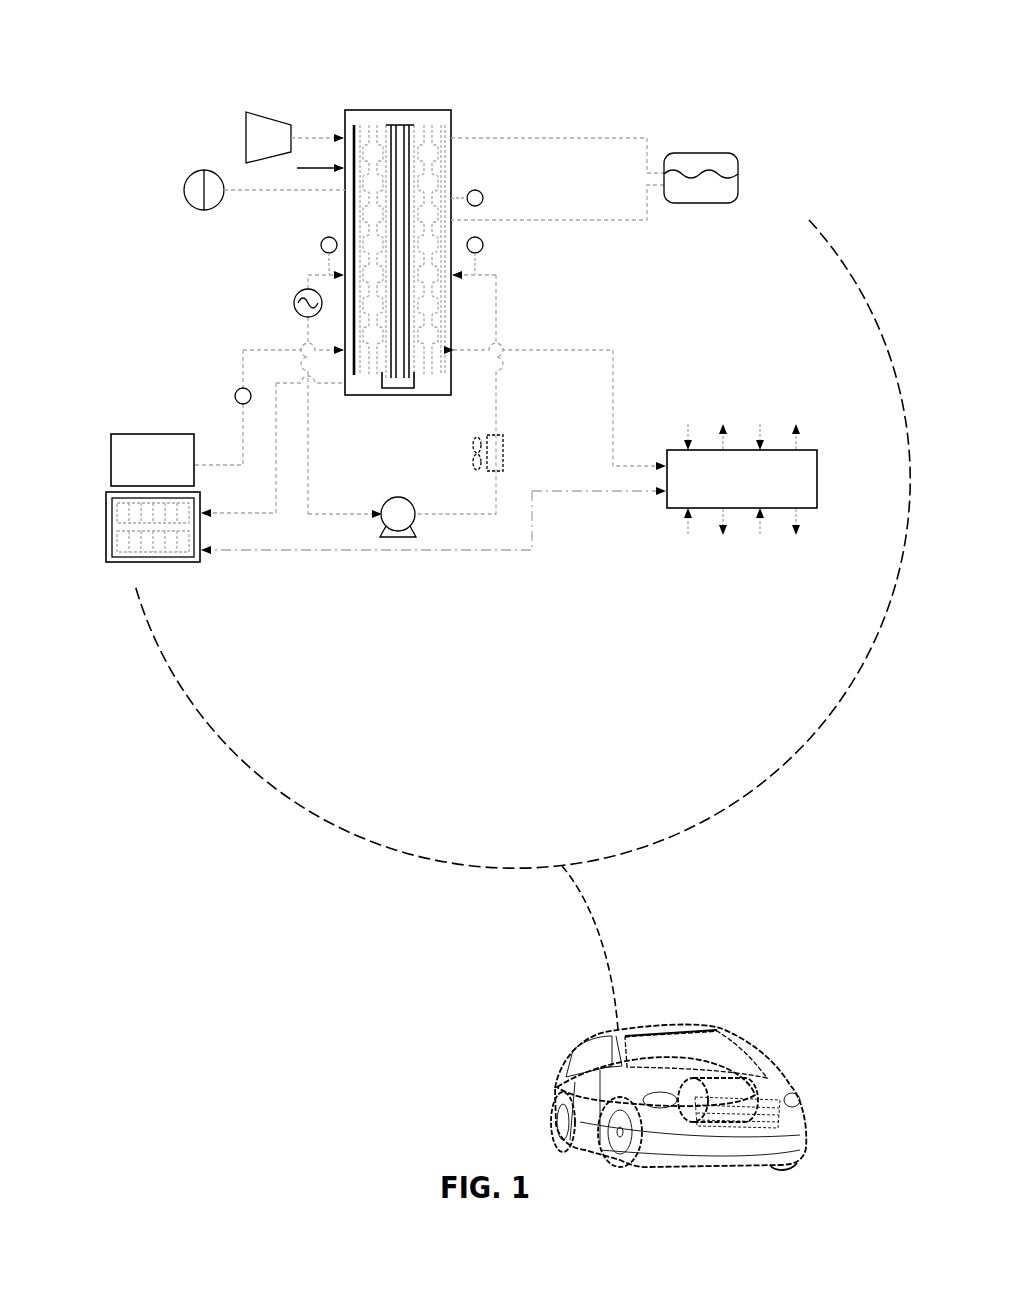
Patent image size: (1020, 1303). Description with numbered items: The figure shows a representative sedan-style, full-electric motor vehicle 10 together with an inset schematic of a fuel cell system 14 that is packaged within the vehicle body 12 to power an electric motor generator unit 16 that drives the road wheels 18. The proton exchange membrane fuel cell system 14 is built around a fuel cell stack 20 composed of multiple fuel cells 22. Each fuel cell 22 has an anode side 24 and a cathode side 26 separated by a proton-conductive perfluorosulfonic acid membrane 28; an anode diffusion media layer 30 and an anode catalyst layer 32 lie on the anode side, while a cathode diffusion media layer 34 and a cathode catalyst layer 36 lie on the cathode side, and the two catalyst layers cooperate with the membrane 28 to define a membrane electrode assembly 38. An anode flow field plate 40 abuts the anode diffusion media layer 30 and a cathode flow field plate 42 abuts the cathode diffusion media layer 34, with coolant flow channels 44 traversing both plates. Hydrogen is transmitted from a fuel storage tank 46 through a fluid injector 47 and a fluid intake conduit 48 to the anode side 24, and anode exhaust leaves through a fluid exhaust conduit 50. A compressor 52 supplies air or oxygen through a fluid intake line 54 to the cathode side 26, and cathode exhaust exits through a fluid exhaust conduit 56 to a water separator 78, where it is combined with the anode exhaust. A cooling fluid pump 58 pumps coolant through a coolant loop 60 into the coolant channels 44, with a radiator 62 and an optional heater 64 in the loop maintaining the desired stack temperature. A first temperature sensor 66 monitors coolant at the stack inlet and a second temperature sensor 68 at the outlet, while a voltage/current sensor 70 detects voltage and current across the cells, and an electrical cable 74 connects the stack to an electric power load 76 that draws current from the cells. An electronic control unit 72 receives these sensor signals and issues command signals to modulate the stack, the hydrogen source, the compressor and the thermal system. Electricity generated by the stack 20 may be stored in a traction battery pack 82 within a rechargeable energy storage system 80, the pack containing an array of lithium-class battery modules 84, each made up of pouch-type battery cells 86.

The motor vehicle 10 is at (745, 998).
The vehicle body 12 is at (770, 1085).
The fuel cell system 14 is at (740, 45).
The electric motor generator unit 16 is at (738, 1078).
The road wheels 18 is at (560, 1118).
The fuel cell stack 20 is at (445, 112).
The fuel cell 22 is at (452, 118).
The anode side 24 is at (299, 171).
The cathode side 26 is at (453, 178).
The proton-conductive perfluorosulfonic acid membrane 28 is at (398, 125).
The anode diffusion media layer 30 is at (372, 125).
The anode catalyst layer 32 is at (392, 125).
The cathode diffusion media layer 34 is at (415, 125).
The cathode catalyst layer 36 is at (405, 125).
The membrane electrode assembly 38 is at (398, 388).
The anode flow field plate 40 is at (372, 375).
The cathode flow field plate 42 is at (424, 375).
The coolant flow channels 44 is at (430, 152).
The fuel storage tank 46 is at (136, 434).
The fluid injector 47 is at (235, 396).
The fluid intake conduit 48 is at (243, 350).
The fluid exhaust conduit 50 is at (609, 222).
The compressor 52 is at (246, 125).
The fluid intake line 54 is at (320, 137).
The fluid exhaust conduit 56 is at (611, 137).
The cooling fluid pump 58 is at (388, 500).
The coolant loop 60 is at (497, 392).
The radiator 62 is at (504, 450).
The heater 64 is at (294, 303).
The first temperature sensor 66 is at (483, 245).
The second temperature sensor 68 is at (321, 245).
The voltage/current sensor 70 is at (483, 200).
The electronic control unit 72 is at (817, 470).
The electrical cable 74 is at (256, 192).
The electric power load 76 is at (184, 190).
The water separator 78 is at (727, 153).
The rechargeable energy storage system 80 is at (106, 492).
The traction battery pack 82 is at (112, 502).
The battery modules 84 is at (192, 503).
The battery cells 86 is at (118, 542).